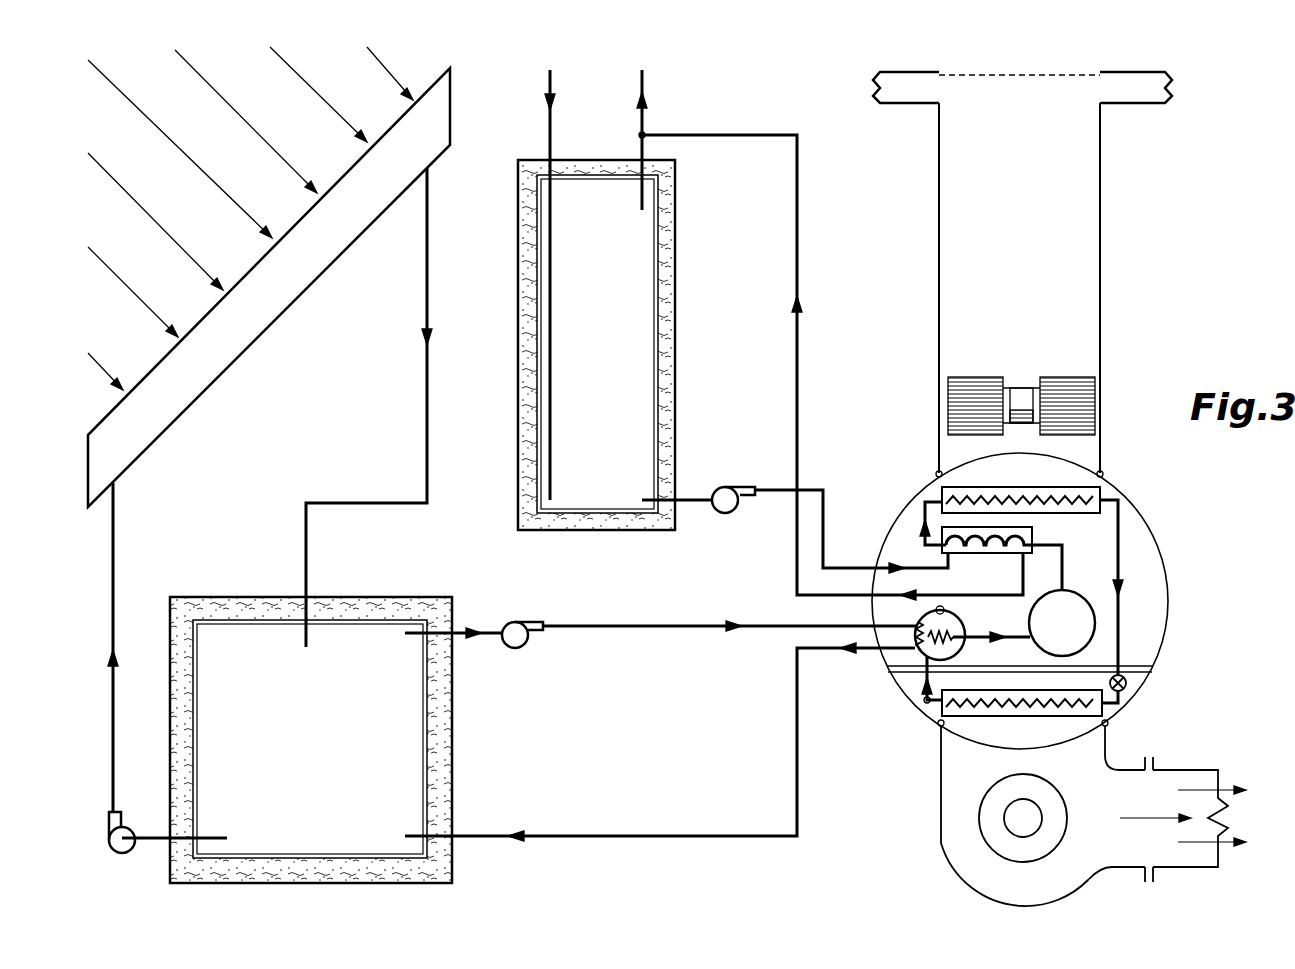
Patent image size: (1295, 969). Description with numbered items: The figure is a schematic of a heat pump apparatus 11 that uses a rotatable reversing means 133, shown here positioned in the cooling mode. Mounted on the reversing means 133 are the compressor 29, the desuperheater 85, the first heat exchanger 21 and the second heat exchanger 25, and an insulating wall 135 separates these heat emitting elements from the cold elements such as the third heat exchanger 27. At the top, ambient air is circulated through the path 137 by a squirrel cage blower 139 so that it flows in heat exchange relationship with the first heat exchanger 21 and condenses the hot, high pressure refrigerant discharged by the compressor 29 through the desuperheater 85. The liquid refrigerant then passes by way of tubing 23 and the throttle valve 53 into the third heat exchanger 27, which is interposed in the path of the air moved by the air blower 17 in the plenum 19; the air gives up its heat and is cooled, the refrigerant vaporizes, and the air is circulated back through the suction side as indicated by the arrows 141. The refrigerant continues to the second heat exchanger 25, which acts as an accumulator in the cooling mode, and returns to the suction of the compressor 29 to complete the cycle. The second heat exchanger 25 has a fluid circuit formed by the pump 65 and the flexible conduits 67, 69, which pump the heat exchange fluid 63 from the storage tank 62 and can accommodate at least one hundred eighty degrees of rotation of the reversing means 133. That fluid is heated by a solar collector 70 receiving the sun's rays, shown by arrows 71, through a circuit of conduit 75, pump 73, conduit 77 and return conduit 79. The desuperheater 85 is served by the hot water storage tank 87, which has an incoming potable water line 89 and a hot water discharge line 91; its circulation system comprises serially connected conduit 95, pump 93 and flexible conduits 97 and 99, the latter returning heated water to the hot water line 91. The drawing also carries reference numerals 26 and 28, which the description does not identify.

The apparatus 11 is at (1115, 260).
The air blower 17 is at (1023, 818).
The plenum 19 is at (1170, 770).
The first heat exchanger 21 is at (942, 500).
The tubing 23 is at (1120, 542).
The second heat exchanger 25 is at (960, 624).
The sensing bulb 26 is at (936, 609).
The third heat exchanger 27 is at (1005, 718).
The refrigerant line 28 is at (925, 700).
The compressor 29 is at (1068, 600).
The throttle valve 53 is at (1126, 690).
The storage tank 62 is at (345, 606).
The heat exchange fluid 63 is at (234, 632).
The pump 65 is at (518, 648).
The conduit 67 is at (630, 626).
The conduit 69 is at (622, 835).
The solar collector 70 is at (273, 307).
The arrows 71 is at (132, 102).
The pump 73 is at (128, 830).
The conduit 75 is at (155, 842).
The conduit 77 is at (115, 542).
The return conduit 79 is at (430, 252).
The desuperheater 85 is at (940, 548).
The hot water storage tank 87 is at (632, 250).
The incoming potable water line 89 is at (552, 79).
The hot water discharge line 91 is at (648, 79).
The pump 93 is at (736, 512).
The conduit 95 is at (694, 499).
The conduit 97 is at (815, 490).
The conduit 99 is at (800, 256).
The reversing means 133 is at (1152, 597).
The insulating wall 135 is at (1128, 678).
The path 137 is at (1073, 145).
The squirrel cage blower 139 is at (1060, 390).
The arrows 141 is at (1035, 692).